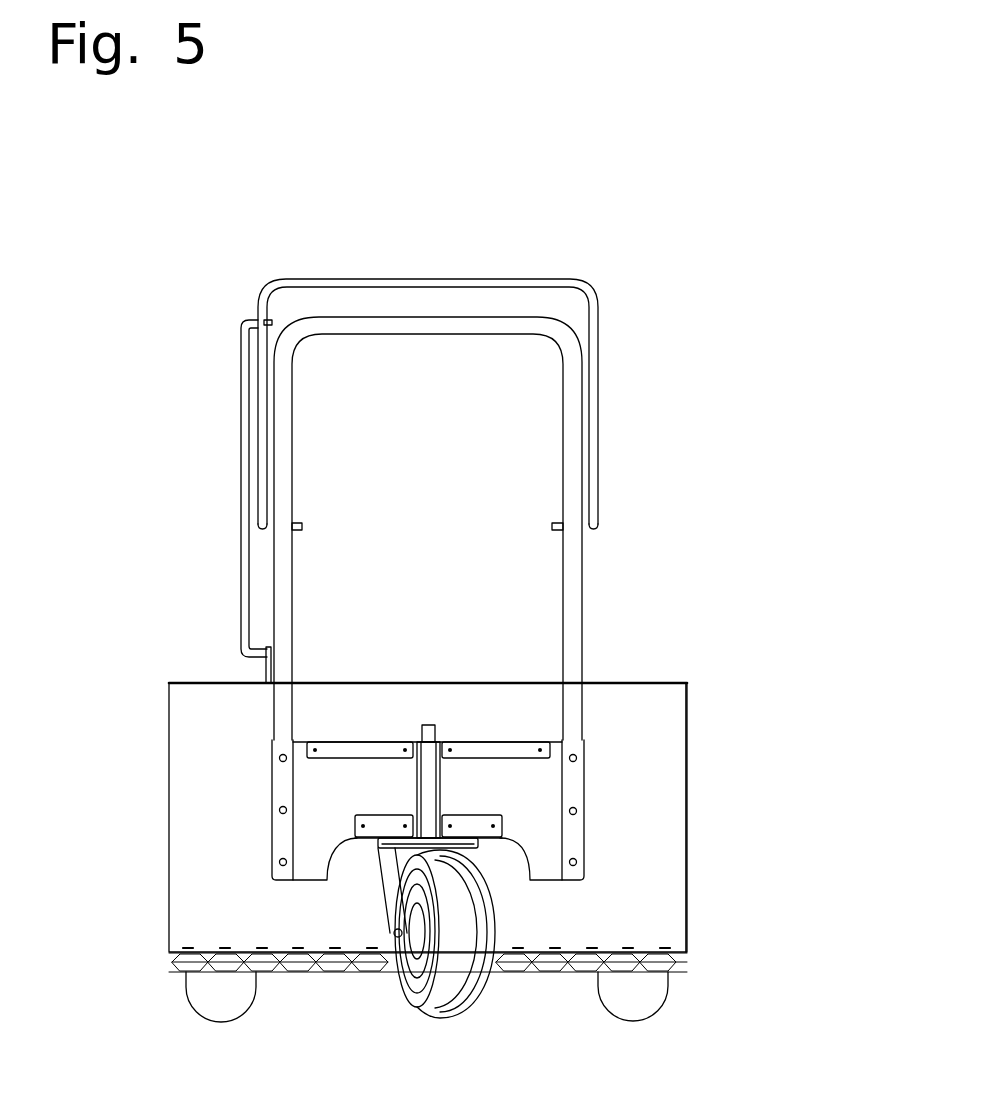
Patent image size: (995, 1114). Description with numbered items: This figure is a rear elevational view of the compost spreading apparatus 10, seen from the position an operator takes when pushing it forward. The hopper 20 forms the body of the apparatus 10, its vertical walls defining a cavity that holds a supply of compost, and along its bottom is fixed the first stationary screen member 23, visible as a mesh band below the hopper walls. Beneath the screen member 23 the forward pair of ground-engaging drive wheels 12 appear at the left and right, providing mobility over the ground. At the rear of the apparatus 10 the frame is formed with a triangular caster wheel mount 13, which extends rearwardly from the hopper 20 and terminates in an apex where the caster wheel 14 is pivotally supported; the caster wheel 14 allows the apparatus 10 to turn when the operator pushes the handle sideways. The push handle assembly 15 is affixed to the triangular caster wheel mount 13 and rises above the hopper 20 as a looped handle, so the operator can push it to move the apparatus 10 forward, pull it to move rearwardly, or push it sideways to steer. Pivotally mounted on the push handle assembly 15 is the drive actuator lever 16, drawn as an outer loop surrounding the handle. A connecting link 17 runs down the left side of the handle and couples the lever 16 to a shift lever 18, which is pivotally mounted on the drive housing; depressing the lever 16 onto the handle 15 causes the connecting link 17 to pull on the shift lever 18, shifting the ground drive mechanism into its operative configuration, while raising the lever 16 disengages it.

The compost spreading apparatus 10 is at (620, 160).
The ground-engaging drive wheels 12 is at (218, 1007).
The triangular caster wheel mount 13 is at (548, 792).
The caster wheel 14 is at (477, 940).
The push handle assembly 15 is at (577, 598).
The drive actuator lever 16 is at (422, 280).
The connecting link 17 is at (242, 535).
The shift lever 18 is at (266, 668).
The hopper 20 is at (208, 795).
The first stationary screen member 23 is at (363, 972).